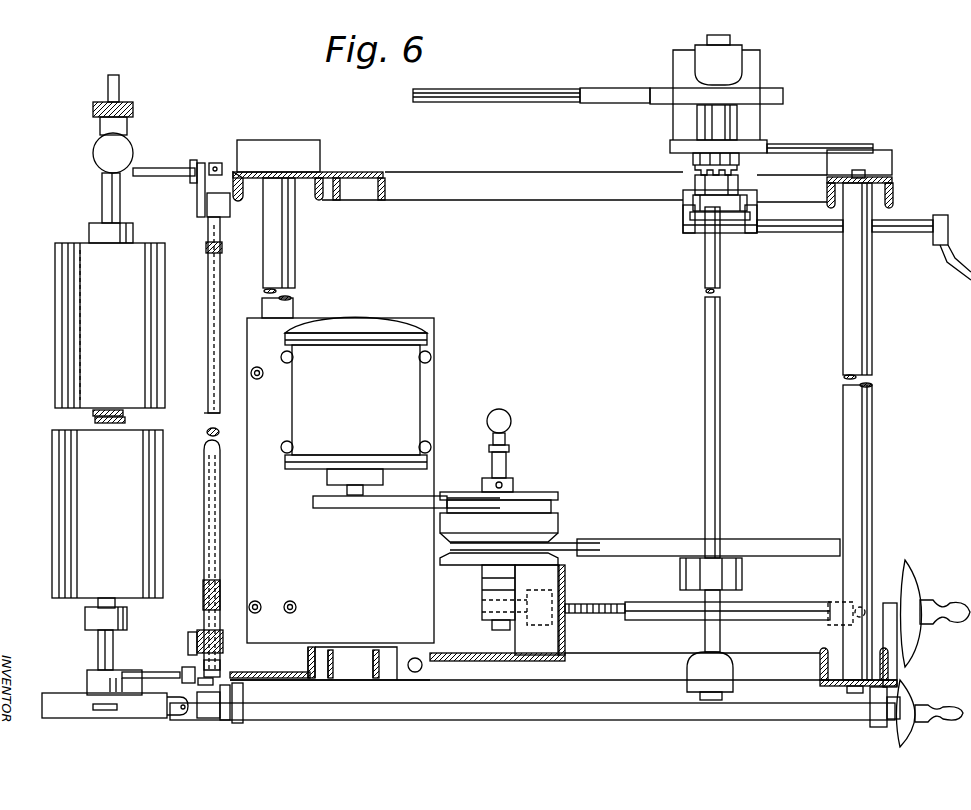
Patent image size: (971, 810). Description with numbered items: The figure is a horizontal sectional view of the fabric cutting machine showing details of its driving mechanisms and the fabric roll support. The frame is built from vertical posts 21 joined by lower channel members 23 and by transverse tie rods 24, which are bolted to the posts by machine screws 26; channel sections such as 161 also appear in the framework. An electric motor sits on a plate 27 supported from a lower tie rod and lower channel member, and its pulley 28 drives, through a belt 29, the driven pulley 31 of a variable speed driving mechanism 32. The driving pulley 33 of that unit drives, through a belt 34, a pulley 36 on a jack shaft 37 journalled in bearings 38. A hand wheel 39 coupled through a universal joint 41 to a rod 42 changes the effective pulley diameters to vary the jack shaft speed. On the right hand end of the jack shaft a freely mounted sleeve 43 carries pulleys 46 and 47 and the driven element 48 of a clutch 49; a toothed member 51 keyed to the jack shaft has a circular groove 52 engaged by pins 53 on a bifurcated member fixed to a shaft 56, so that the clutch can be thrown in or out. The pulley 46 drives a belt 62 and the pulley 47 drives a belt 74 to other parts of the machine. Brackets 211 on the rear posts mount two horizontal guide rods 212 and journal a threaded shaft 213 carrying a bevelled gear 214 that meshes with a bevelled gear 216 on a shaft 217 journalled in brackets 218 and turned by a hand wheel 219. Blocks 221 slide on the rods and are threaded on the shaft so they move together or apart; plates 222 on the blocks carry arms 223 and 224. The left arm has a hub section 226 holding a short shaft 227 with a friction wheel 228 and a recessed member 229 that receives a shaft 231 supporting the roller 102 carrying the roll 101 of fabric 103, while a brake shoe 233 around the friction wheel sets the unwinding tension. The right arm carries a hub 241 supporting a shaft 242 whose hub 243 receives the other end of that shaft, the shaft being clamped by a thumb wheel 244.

The vertical post 21 is at (282, 172).
The lower channel member 23 is at (598, 668).
The tie rod 24 is at (292, 293).
The machine screw 26 is at (865, 173).
The plate 27 is at (420, 483).
The pulley 28 is at (345, 508).
The belt 29 is at (418, 507).
The driven pulley 31 is at (558, 493).
The variable speed driving mechanism 32 is at (518, 484).
The driving pulley 33 is at (475, 562).
The belt 34 is at (568, 543).
The pulley 36 is at (637, 540).
The jack shaft 37 is at (705, 305).
The bearing 38 is at (730, 60).
The hand wheel 39 is at (938, 605).
The universal joint 41 is at (858, 604).
The rod 42 is at (752, 604).
The sleeve 43 is at (708, 127).
The pulley 46 is at (765, 92).
The pulley 47 is at (757, 142).
The driven element 48 is at (700, 160).
The clutch 49 is at (686, 173).
The toothed member 51 is at (738, 185).
The circular groove 52 is at (693, 200).
The pin 53 is at (755, 202).
The shaft 56 is at (913, 233).
The belt 62 is at (598, 88).
The belt 74 is at (832, 148).
The roll of fabric 101 is at (52, 357).
The roller 102 is at (95, 421).
The fabric 103 is at (78, 338).
The channel 161 is at (378, 176).
The bracket 211 is at (235, 172).
The horizontal rod 212 is at (208, 234).
The shaft 213 is at (210, 403).
The bevelled gear 214 is at (200, 716).
The bevelled gear 216 is at (230, 718).
The shaft 217 is at (548, 704).
The bracket 218 is at (878, 728).
The hand wheel 219 is at (920, 700).
The block 221 is at (207, 210).
The plate 222 is at (196, 192).
The arm 223 is at (145, 664).
The arm 224 is at (170, 162).
The hub section 226 is at (96, 680).
The short shaft 227 is at (100, 646).
The friction wheel 228 is at (68, 718).
The recessed member 229 is at (85, 625).
The shaft 231 is at (98, 602).
The brake shoe 233 is at (85, 708).
The hub 241 is at (96, 140).
The shaft 242 is at (100, 186).
The hub 243 is at (100, 231).
The thumb wheel 244 is at (123, 152).